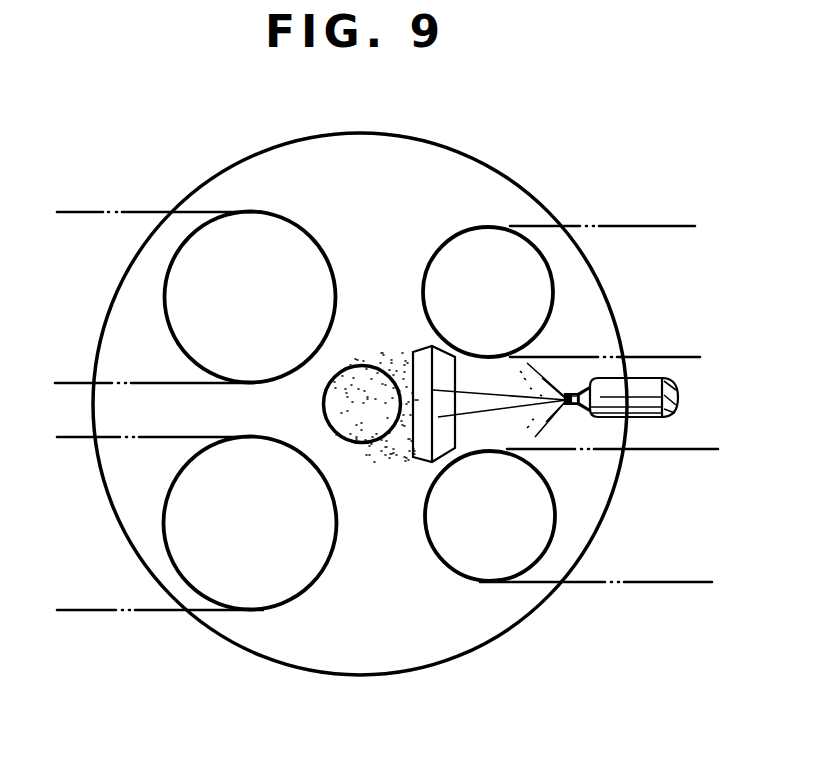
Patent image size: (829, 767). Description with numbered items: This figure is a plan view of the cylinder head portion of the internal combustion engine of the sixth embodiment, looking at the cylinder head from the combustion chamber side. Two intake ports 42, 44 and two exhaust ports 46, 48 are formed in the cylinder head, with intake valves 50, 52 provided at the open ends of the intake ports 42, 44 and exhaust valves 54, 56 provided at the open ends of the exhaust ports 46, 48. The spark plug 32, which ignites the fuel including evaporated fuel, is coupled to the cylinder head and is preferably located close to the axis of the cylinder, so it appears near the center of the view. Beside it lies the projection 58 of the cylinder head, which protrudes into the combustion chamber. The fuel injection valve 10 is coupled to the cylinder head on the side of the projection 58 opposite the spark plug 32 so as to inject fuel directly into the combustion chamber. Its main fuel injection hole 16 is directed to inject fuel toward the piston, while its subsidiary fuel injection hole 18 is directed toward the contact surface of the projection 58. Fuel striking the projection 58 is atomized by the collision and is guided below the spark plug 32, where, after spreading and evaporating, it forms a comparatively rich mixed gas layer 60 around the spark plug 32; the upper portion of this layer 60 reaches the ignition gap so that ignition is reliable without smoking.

The fuel injection valve 10 is at (657, 378).
The main fuel injection hole 16 is at (565, 392).
The subsidiary fuel injection hole 18 is at (584, 388).
The spark plug 32 is at (358, 366).
The intake port 42 is at (133, 210).
The intake port 44 is at (108, 612).
The exhaust port 46 is at (653, 224).
The exhaust port 48 is at (630, 584).
The intake valve 50 is at (300, 228).
The intake valve 52 is at (302, 590).
The exhaust valve 54 is at (474, 230).
The exhaust valve 56 is at (453, 575).
The projection 58 is at (430, 353).
The rich mixed gas layer 60 is at (387, 452).